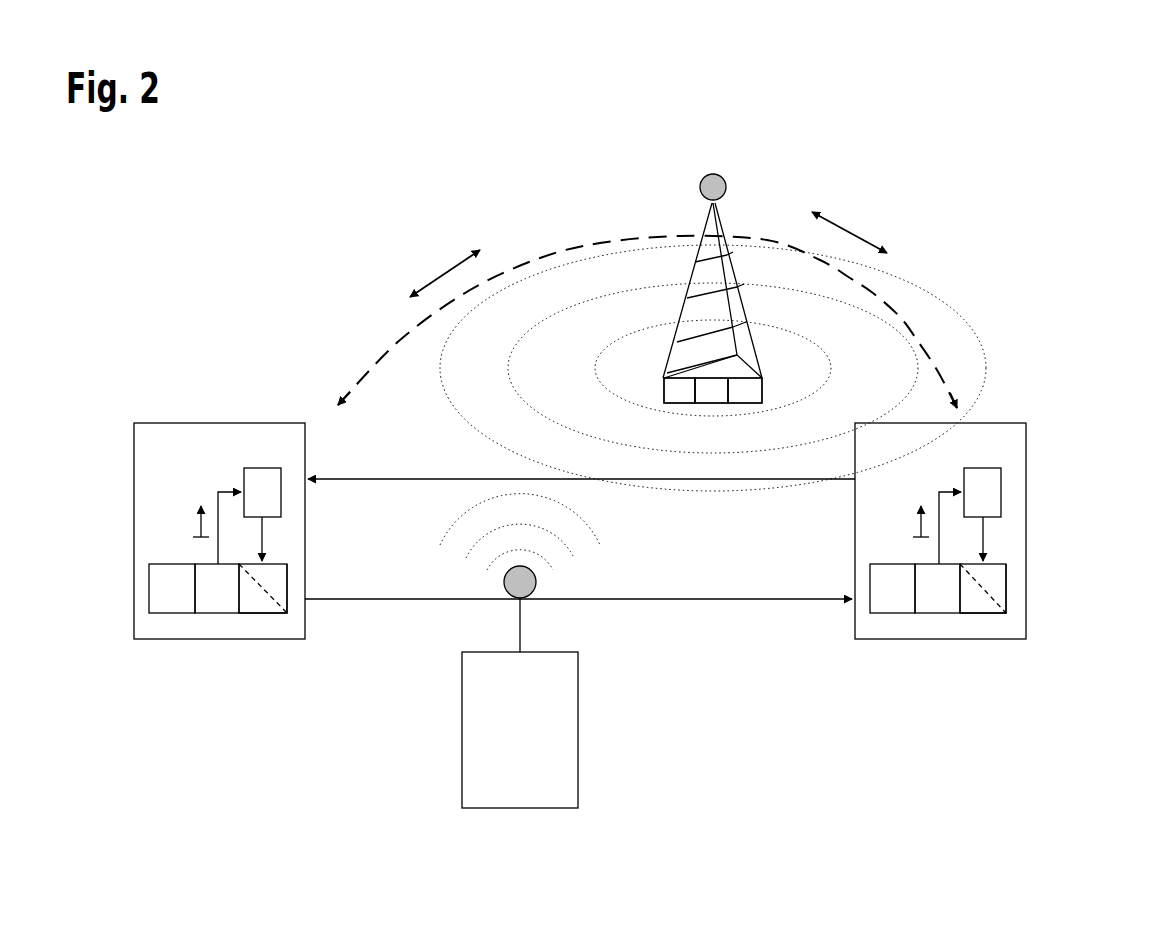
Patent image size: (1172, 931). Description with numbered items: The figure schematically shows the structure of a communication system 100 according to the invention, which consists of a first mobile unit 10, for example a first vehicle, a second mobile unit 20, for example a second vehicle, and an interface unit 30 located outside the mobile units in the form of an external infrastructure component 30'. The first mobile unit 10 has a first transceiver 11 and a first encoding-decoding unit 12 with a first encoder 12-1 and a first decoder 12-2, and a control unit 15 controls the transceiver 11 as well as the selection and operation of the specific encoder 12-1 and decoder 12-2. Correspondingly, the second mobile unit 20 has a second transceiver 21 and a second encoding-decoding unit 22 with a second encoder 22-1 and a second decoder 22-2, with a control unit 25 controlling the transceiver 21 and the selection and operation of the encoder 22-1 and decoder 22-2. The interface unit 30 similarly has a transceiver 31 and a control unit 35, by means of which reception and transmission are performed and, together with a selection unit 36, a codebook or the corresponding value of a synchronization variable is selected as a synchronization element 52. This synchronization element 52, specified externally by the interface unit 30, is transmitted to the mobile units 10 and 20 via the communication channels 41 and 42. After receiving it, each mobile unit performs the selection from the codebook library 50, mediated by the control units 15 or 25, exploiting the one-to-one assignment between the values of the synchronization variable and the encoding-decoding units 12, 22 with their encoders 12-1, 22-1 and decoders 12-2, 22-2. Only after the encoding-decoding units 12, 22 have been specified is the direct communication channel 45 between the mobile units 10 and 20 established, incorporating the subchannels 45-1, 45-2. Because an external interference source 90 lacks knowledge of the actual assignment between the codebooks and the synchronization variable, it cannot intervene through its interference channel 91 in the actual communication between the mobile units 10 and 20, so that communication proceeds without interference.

The communication system 100 is at (195, 234).
The first mobile unit 10 is at (157, 468).
The first transceiver 11 is at (172, 604).
The control unit 15 is at (218, 598).
The first encoding-decoding unit 12 is at (316, 635).
The first encoder 12-1 is at (277, 592).
The first decoder 12-2 is at (258, 600).
The codebook library 50 is at (262, 480).
The synchronization element 52 is at (375, 362).
The second mobile unit 20 is at (1005, 452).
The second transceiver 21 is at (887, 602).
The control unit 25 is at (940, 598).
The second encoding-decoding unit 22 is at (1036, 636).
The second encoder 22-1 is at (993, 585).
The second decoder 22-2 is at (978, 600).
The interface unit 30 is at (681, 262).
The external infrastructure component 30' is at (712, 288).
The transceiver 31 is at (672, 392).
The control unit 35 is at (712, 394).
The selection unit 36 is at (752, 392).
The communication channel 41 is at (440, 280).
The communication channel 42 is at (855, 230).
The direct communication channel 45 is at (580, 561).
The subchannel 45-1 is at (382, 599).
The subchannel 45-2 is at (400, 479).
The external interference source 90 is at (550, 713).
The interference channel 91 is at (522, 630).